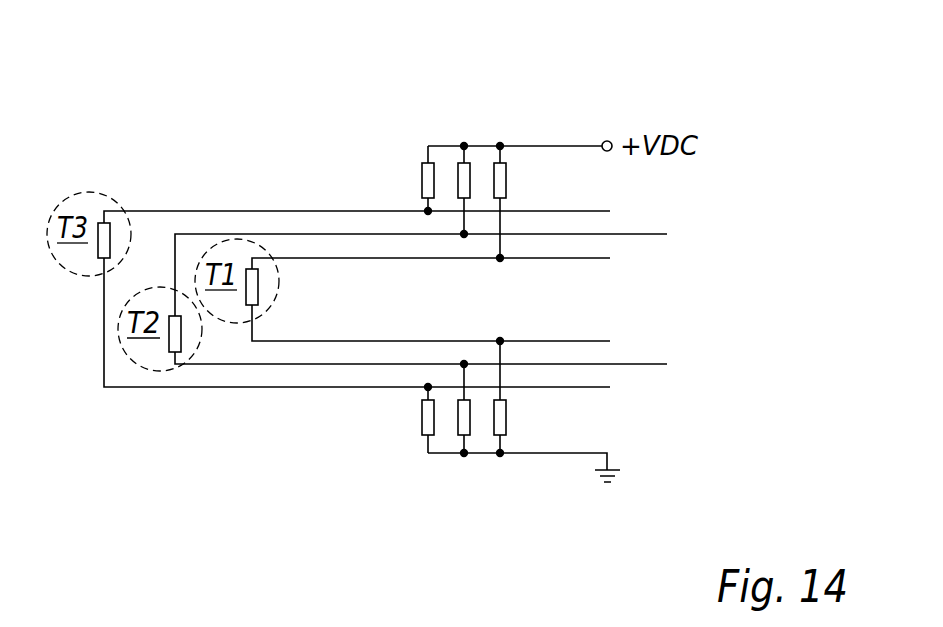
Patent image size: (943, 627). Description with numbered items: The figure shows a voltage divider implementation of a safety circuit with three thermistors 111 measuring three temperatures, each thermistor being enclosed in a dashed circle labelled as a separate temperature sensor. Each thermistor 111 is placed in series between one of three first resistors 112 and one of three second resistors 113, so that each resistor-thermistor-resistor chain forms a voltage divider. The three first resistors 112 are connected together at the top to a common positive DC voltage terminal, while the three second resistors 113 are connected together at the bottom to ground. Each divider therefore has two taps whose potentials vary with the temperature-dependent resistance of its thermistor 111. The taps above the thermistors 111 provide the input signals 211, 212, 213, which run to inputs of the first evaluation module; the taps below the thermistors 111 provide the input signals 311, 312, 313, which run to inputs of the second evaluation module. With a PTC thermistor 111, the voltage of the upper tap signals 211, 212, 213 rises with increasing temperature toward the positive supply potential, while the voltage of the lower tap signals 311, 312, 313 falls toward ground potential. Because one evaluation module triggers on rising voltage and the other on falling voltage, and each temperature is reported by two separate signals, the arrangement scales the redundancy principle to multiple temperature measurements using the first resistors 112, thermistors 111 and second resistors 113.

The thermistor 111 is at (110, 236).
The first resistor 112 is at (458, 168).
The second resistor 113 is at (422, 430).
The input signal 211 is at (454, 237).
The input signal 212 is at (446, 257).
The input signal 213 is at (380, 213).
The input signal 311 is at (454, 352).
The input signal 312 is at (446, 376).
The input signal 313 is at (380, 332).